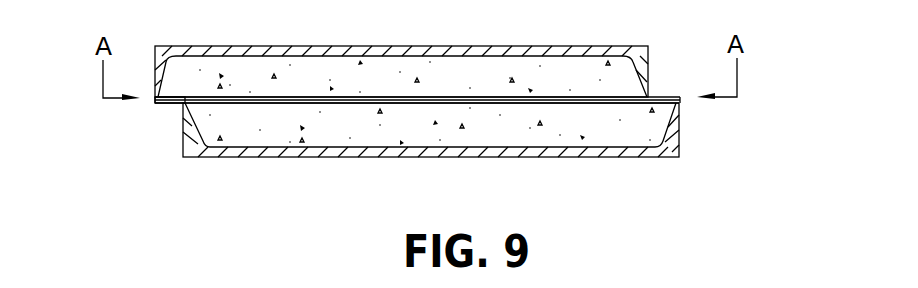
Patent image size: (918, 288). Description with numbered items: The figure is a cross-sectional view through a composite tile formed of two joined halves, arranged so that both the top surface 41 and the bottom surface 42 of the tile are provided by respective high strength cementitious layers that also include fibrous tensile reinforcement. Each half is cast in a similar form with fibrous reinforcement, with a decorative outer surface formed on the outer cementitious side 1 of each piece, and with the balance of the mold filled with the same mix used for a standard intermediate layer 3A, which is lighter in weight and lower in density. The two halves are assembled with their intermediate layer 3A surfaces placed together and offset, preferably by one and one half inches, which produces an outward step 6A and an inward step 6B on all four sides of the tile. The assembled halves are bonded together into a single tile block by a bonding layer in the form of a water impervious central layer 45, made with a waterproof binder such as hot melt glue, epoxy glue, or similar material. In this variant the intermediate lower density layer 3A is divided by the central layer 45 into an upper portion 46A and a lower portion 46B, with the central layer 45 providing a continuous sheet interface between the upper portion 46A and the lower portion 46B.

The outer cementitious side 1 is at (530, 156).
The intermediate layer 3A is at (350, 78).
The outward step 6A is at (662, 98).
The inward step 6B is at (163, 105).
The top surface 41 is at (252, 50).
The bottom surface 42 is at (310, 155).
The central layer 45 is at (172, 103).
The upper portion 46A is at (522, 66).
The lower portion 46B is at (607, 128).